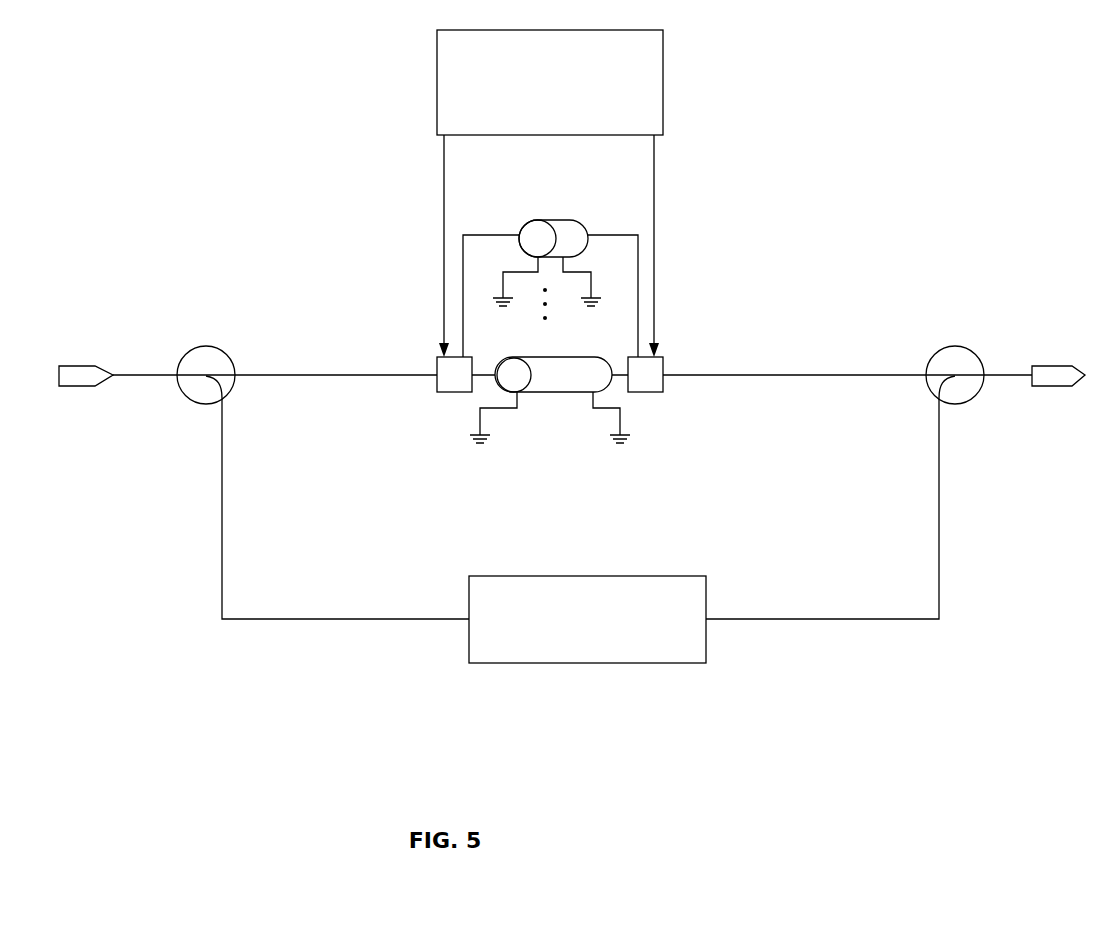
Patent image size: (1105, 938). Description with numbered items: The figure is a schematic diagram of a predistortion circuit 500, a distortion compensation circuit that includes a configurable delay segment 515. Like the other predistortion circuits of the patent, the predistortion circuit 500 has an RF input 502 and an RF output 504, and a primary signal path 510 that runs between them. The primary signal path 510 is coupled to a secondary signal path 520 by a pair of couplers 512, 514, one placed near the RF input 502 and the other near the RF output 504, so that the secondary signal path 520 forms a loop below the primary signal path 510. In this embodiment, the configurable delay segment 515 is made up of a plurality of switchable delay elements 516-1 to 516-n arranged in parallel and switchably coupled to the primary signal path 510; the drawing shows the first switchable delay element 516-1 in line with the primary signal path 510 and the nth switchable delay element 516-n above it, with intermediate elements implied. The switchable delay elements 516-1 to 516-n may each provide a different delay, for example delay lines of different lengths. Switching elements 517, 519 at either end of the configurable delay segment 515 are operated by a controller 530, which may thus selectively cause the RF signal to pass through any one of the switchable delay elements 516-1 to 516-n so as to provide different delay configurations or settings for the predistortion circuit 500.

The predistortion circuit 500 is at (152, 164).
The RF input 502 is at (75, 366).
The RF output 504 is at (1056, 366).
The primary signal path 510 is at (248, 288).
The coupler 512 is at (186, 354).
The coupler 514 is at (936, 354).
The configurable delay segment 515 is at (549, 435).
The switchable delay element 516-1 is at (550, 401).
The switchable delay element 516-n is at (538, 220).
The first optical switch 517 is at (434, 393).
The second optical switch 519 is at (665, 393).
The secondary signal path 520 is at (158, 557).
The controller 530 is at (437, 62).